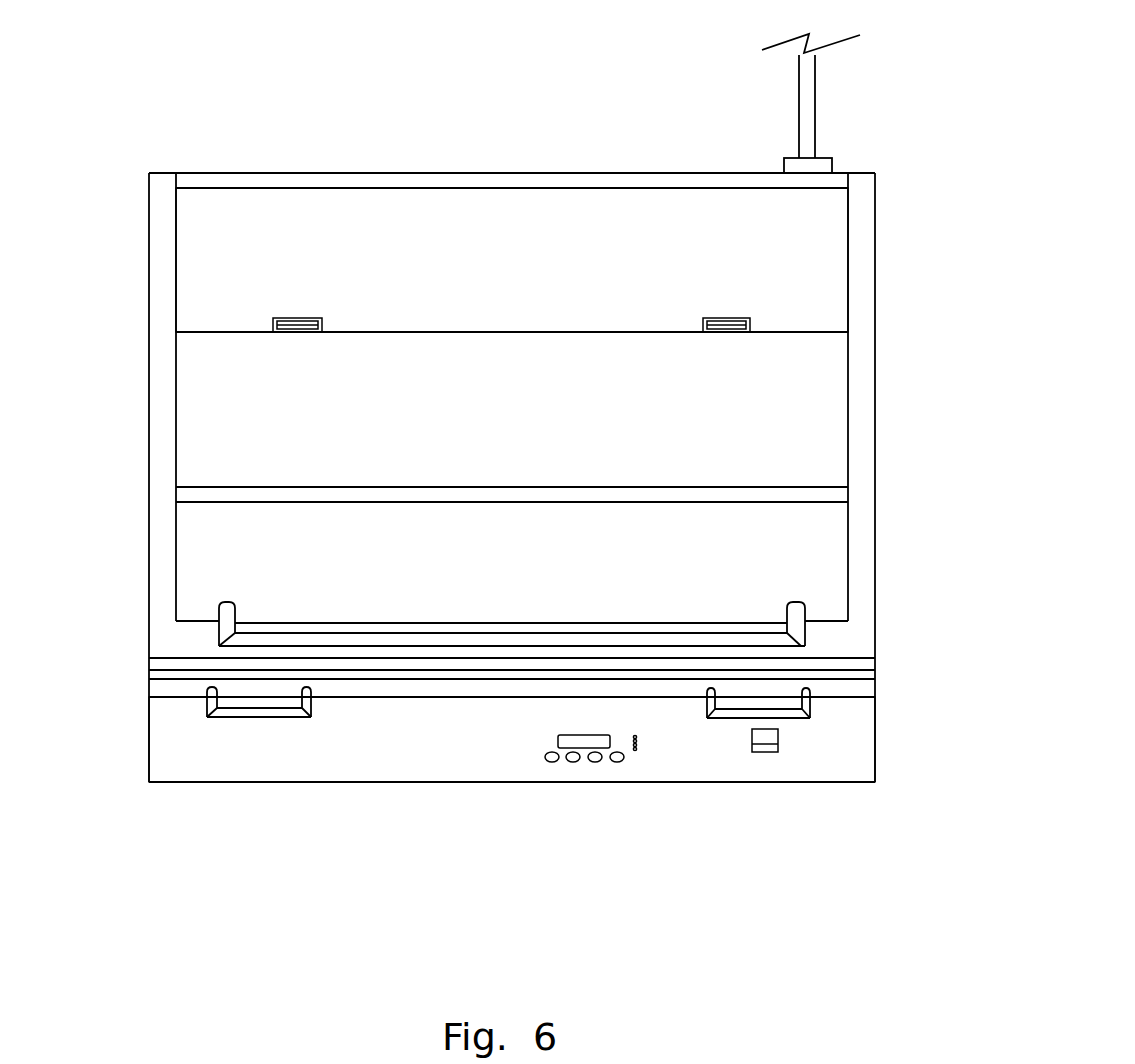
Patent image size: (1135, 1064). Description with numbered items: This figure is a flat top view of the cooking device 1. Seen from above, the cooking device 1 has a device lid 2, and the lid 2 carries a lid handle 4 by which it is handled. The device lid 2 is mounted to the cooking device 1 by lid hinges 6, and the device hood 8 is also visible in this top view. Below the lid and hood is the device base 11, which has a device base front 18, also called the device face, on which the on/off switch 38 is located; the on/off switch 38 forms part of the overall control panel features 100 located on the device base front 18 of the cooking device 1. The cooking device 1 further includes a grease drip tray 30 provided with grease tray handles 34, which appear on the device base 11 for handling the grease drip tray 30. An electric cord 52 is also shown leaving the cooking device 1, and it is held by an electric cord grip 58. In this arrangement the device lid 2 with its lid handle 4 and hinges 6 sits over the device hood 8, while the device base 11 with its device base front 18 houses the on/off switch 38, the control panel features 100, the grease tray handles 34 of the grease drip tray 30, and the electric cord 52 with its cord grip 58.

The cooking device 1 is at (420, 796).
The device lid 2 is at (209, 578).
The lid handle 4 is at (348, 644).
The lid hinges 6 is at (303, 318).
The device hood 8 is at (597, 218).
The device base 11 is at (155, 179).
The device base front 18 is at (487, 756).
The grease drip tray 30 is at (855, 690).
The grease tray handles 34 is at (207, 717).
The on/off switch 38 is at (752, 752).
The electric cord 52 is at (805, 112).
The electric cord grip 58 is at (787, 164).
The control panel features 100 is at (583, 771).